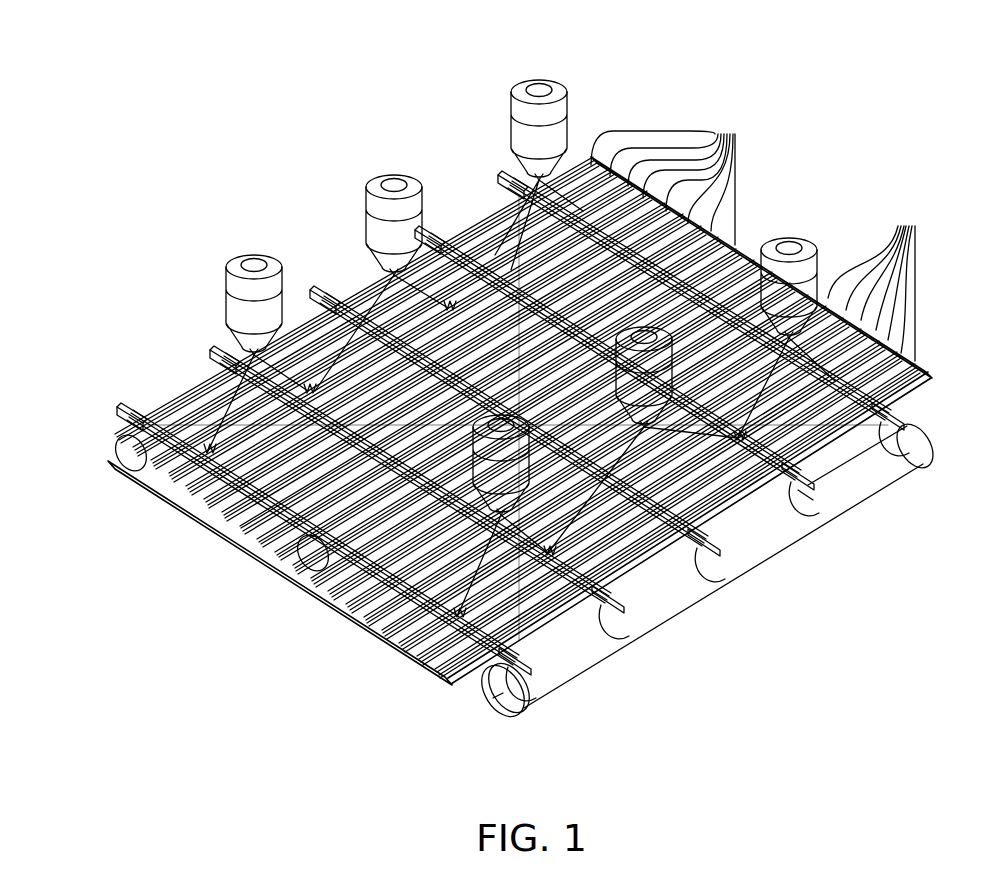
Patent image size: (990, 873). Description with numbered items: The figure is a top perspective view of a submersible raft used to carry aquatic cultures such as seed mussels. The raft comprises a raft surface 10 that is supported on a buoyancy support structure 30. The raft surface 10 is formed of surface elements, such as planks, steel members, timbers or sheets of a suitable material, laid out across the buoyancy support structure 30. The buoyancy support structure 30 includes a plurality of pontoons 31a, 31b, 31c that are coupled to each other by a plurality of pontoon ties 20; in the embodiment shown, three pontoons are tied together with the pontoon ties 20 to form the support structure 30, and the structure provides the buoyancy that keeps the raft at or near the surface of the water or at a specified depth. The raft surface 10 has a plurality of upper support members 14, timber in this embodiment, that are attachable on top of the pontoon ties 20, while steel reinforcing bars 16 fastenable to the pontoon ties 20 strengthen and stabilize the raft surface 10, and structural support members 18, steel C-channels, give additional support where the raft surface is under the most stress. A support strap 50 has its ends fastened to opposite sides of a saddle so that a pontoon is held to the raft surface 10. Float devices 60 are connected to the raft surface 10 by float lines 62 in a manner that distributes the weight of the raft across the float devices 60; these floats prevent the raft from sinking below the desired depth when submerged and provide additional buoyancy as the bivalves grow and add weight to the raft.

The raft surface 10 is at (127, 538).
The upper support members 14 is at (756, 231).
The reinforcing bars 16 is at (503, 181).
The structural support members 18 is at (250, 528).
The pontoon ties 20 is at (215, 349).
The buoyancy support structure 30 is at (694, 613).
The pontoon 31a is at (105, 463).
The pontoon 31b is at (300, 591).
The pontoon 31c is at (490, 694).
The support strap 50 is at (800, 521).
The float devices 60 is at (531, 82).
The float lines 62 is at (380, 263).